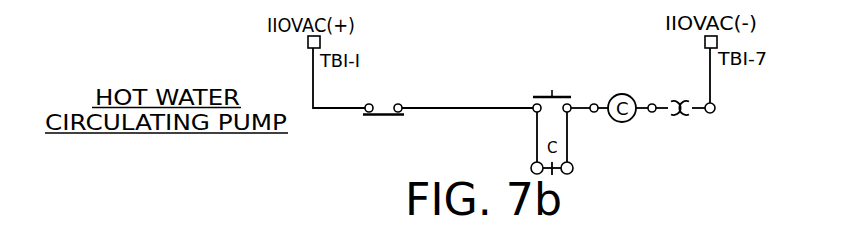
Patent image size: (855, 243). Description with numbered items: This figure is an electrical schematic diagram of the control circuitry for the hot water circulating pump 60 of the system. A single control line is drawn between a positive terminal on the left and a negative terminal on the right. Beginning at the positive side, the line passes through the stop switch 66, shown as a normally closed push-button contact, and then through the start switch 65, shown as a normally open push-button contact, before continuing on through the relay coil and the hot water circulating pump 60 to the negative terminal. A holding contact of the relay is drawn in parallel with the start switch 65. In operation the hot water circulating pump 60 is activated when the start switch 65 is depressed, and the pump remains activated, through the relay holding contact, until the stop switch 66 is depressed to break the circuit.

The stop switch 66 is at (383, 114).
The start switch 65 is at (569, 96).
The hot water circulating pump 60 is at (682, 112).